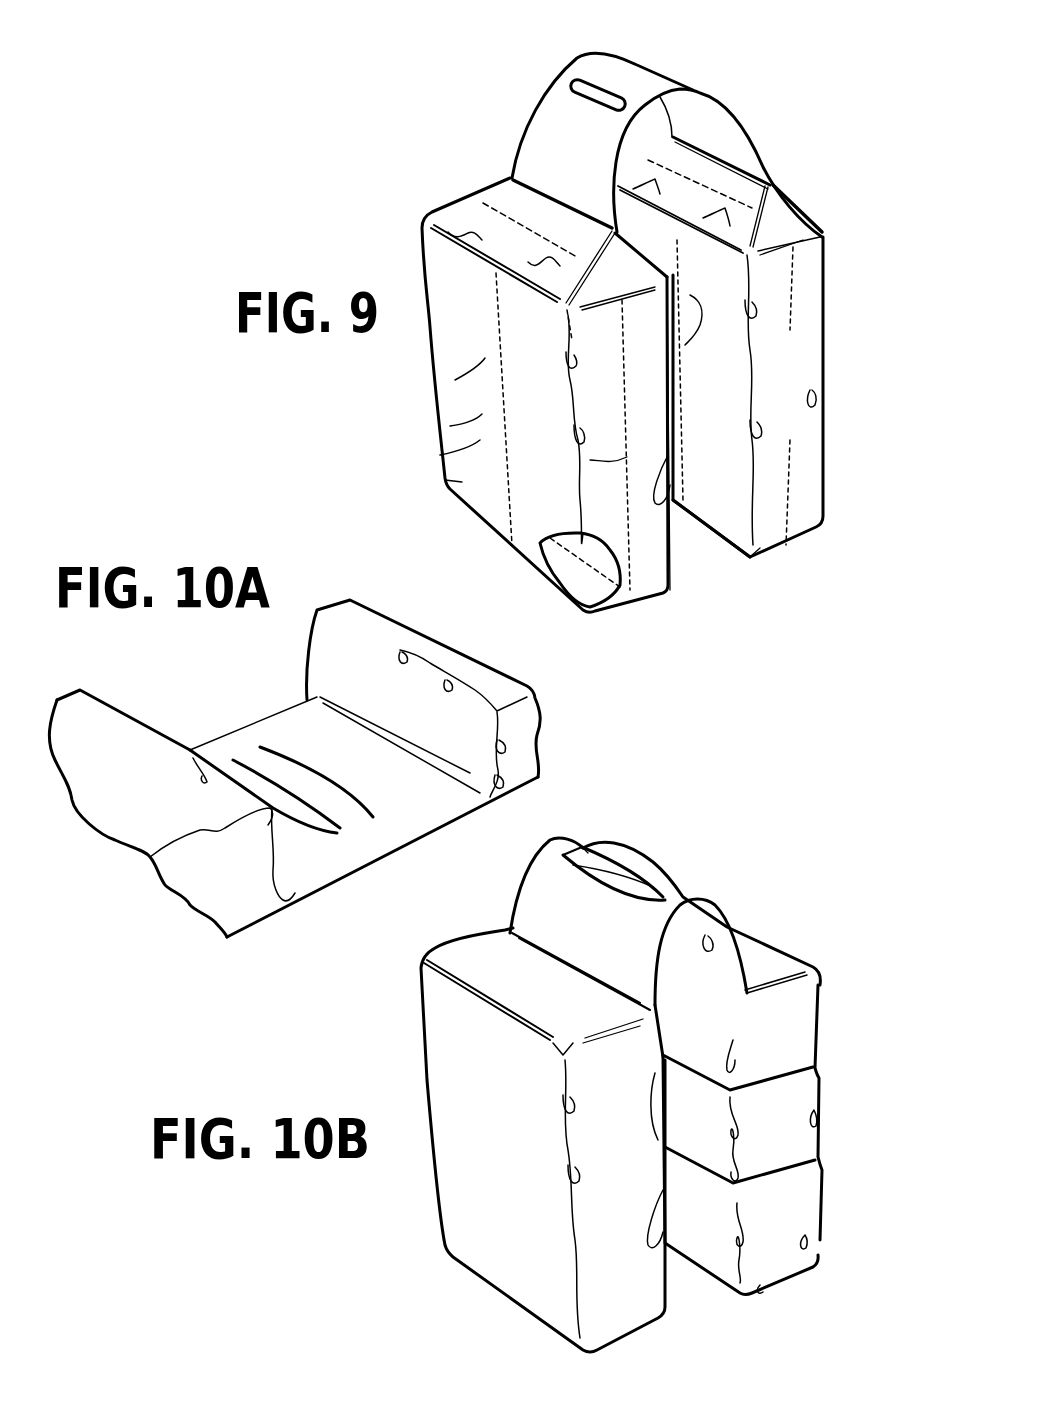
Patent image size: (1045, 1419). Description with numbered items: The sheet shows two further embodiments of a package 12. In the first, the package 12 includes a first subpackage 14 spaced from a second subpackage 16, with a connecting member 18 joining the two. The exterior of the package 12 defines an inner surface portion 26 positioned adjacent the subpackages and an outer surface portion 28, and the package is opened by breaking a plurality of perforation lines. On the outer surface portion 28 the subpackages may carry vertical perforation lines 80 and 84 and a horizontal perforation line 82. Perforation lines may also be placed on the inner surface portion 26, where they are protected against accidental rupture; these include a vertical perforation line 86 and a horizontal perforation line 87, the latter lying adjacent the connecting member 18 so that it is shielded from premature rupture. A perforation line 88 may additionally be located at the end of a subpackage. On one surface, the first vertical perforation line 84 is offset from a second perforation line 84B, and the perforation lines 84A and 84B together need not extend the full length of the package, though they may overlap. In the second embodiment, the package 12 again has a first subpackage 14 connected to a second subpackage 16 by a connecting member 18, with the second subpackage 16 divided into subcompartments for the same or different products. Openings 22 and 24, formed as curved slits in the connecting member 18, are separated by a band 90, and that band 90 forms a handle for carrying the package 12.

In FIG. 9, the package 12 is at (632, 313).
In FIG. 10B, the package 12 is at (657, 1067).
In FIG. 9, the first subpackage 14 is at (453, 360).
In FIG. 10B, the first subpackage 14 is at (513, 1253).
In FIG. 9, the second subpackage 16 is at (813, 343).
In FIG. 10B, the second subpackage 16 is at (790, 1237).
In FIG. 9, the connecting member 18 is at (607, 66).
In FIG. 10A, the connecting member 18 is at (407, 800).
In FIG. 10B, the connecting member 18 is at (707, 943).
In FIG. 10A, the opening 22 is at (320, 833).
In FIG. 10B, the opening 22 is at (587, 867).
In FIG. 10A, the opening 24 is at (330, 763).
In FIG. 10B, the opening 24 is at (677, 883).
In FIG. 9, the inner surface portion 26 is at (718, 530).
In FIG. 9, the outer surface portion 28 is at (457, 426).
In FIG. 9, the vertical perforation line 80 is at (503, 453).
In FIG. 9, the horizontal perforation line 82 is at (513, 220).
In FIG. 9, the vertical perforation line 84 is at (627, 458).
In FIG. 9, the perforation line 84A is at (813, 273).
In FIG. 9, the second perforation line 84B is at (823, 523).
In FIG. 9, the vertical perforation line 86 is at (682, 347).
In FIG. 9, the horizontal perforation line 87 is at (723, 193).
In FIG. 9, the perforation line 88 is at (577, 563).
In FIG. 10A, the band 90 is at (290, 770).
In FIG. 10B, the band 90 is at (630, 853).